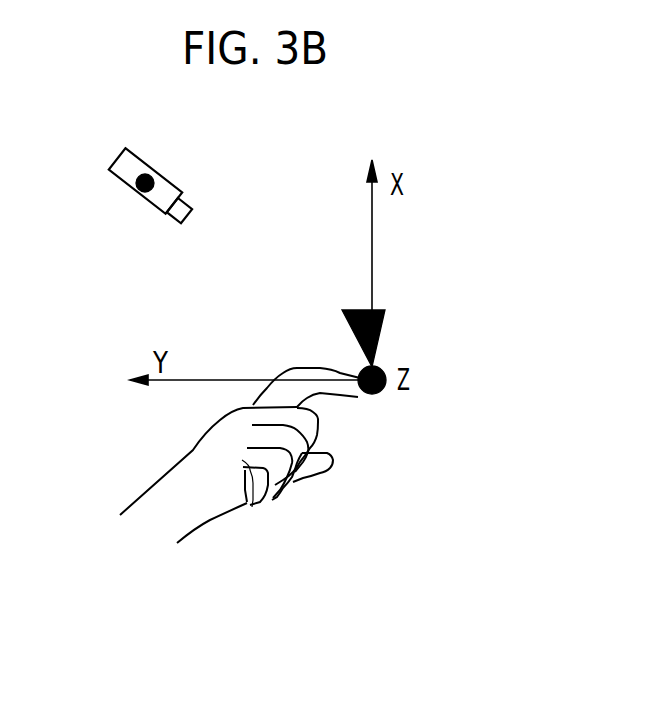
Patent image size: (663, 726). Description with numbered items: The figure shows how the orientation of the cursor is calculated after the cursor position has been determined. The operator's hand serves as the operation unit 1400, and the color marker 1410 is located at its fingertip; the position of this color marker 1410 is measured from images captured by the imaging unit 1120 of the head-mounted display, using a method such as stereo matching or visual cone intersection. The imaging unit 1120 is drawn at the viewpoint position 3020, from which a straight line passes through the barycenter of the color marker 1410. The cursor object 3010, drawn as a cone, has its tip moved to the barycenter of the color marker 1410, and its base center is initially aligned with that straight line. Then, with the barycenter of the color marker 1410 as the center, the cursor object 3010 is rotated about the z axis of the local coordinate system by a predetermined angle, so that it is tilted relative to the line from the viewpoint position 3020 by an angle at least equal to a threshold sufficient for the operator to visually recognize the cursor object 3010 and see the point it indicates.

The imaging unit 1120 is at (165, 173).
The viewpoint position 3020 is at (137, 192).
The cursor object 3010 is at (382, 333).
The color marker 1410 is at (375, 397).
The operation unit 1400 is at (250, 502).